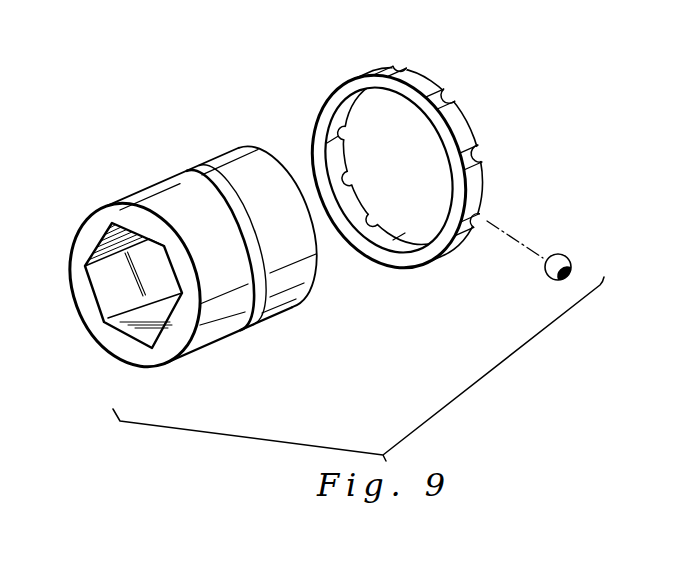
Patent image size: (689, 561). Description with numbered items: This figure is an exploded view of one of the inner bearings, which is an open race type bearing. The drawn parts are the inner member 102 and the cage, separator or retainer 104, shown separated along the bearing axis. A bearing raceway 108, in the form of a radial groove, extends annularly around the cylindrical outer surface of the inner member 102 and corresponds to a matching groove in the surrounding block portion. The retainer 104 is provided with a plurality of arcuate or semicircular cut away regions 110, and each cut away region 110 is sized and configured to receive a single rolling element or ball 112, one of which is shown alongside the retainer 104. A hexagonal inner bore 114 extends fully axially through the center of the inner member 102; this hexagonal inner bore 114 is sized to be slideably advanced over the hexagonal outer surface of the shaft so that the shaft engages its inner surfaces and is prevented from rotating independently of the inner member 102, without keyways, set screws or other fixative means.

The inner member 102 is at (219, 338).
The retainer 104 is at (473, 124).
The bearing raceway 108 is at (188, 170).
The cut away region 110 is at (404, 67).
The ball 112 is at (571, 260).
The hexagonal inner bore 114 is at (114, 300).